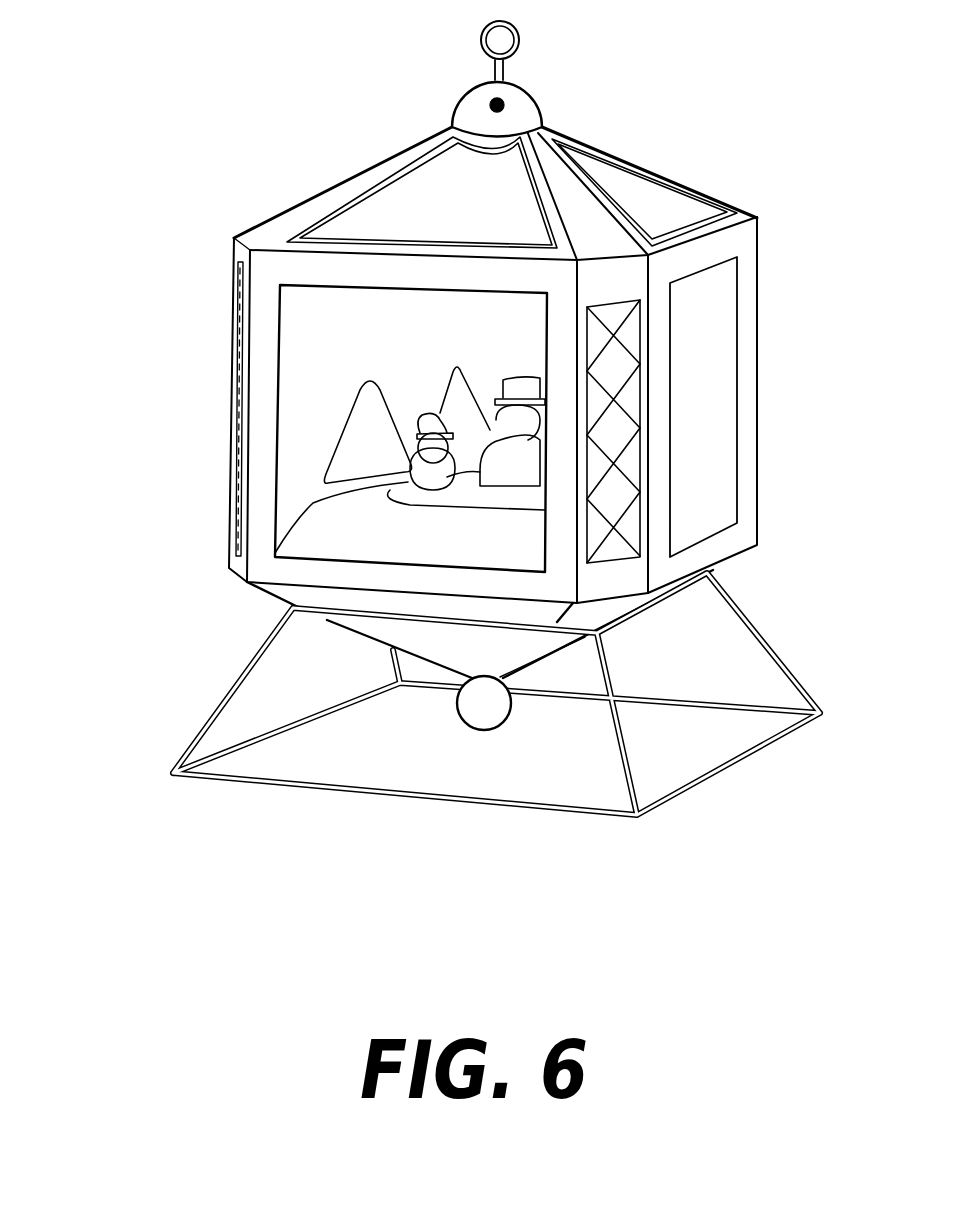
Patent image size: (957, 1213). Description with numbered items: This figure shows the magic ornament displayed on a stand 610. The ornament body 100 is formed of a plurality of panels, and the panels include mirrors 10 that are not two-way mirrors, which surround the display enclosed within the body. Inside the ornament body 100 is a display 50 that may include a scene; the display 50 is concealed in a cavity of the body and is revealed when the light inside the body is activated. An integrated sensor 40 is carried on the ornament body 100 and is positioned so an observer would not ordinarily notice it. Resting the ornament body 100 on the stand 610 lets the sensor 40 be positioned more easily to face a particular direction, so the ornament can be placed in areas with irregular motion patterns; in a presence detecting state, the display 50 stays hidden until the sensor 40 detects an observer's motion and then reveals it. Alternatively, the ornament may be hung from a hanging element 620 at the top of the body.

The mirror 10 is at (700, 383).
The integrated sensor 40 is at (500, 103).
The display 50 is at (317, 533).
The ornament body 100 is at (233, 394).
The stand 610 is at (212, 780).
The hanging element 620 is at (478, 42).